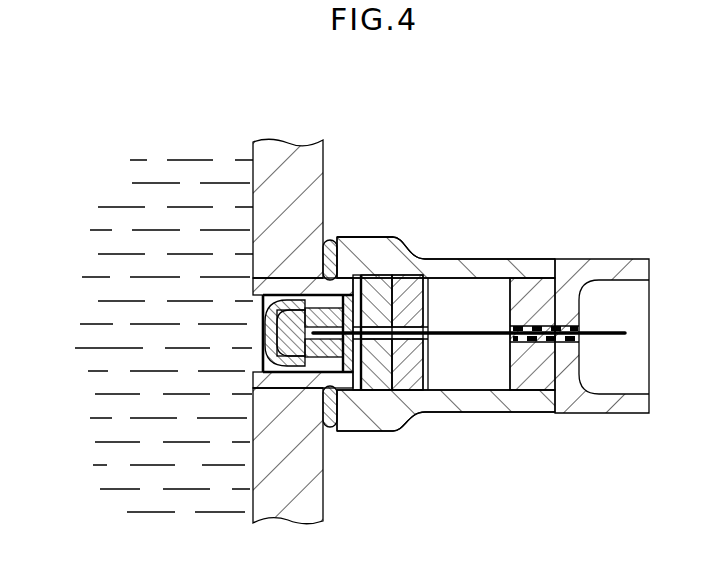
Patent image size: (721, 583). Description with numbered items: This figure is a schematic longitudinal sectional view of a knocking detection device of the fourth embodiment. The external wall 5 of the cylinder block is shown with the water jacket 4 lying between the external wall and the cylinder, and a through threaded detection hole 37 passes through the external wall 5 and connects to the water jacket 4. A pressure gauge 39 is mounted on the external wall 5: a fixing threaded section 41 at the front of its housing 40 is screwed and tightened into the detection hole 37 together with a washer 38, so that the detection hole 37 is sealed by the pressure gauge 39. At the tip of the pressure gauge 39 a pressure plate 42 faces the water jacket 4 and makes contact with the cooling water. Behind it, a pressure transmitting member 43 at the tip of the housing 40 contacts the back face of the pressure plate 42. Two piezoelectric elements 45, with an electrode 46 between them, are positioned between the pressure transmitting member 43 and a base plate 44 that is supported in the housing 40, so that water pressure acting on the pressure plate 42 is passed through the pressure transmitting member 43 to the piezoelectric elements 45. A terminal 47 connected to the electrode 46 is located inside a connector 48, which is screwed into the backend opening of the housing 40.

The water jacket 4 is at (160, 198).
The external wall 5 is at (323, 162).
The detection hole 37 is at (300, 240).
The washer 38 is at (357, 240).
The pressure gauge 39 is at (492, 230).
The housing 40 is at (395, 252).
The fixing threaded section 41 is at (328, 242).
The pressure plate 42 is at (263, 316).
The pressure transmitting member 43 is at (263, 340).
The base plate 44 is at (385, 392).
The piezoelectric elements 45 is at (350, 364).
The electrode 46 is at (320, 360).
The terminal 47 is at (622, 336).
The connector 48 is at (648, 260).